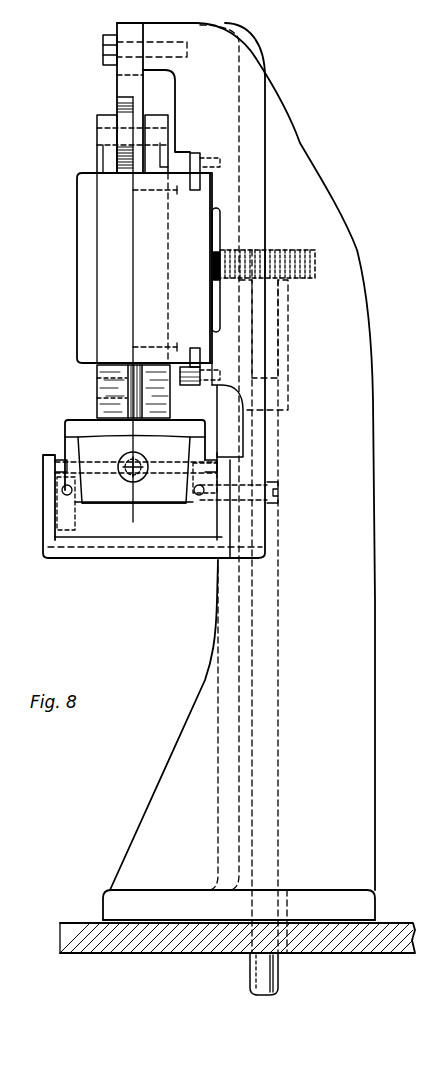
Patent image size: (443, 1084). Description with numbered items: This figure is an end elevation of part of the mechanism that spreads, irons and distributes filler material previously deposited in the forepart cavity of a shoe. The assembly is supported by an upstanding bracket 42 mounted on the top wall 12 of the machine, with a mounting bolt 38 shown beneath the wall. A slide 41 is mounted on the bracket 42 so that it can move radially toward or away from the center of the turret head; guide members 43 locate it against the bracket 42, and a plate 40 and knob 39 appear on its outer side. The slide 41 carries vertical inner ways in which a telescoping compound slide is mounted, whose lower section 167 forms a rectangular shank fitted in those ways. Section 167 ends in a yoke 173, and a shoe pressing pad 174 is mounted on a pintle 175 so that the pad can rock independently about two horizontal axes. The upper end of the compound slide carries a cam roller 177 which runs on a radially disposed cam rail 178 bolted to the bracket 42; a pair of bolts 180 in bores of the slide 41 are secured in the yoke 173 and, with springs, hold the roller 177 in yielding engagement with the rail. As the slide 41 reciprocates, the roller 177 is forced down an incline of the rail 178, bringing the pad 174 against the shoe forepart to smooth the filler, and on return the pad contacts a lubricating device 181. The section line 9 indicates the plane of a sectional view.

The section line 9- 9 is at (117, 96).
The top wall 12 is at (388, 955).
The mounting bolt 38 is at (263, 978).
The adjusting knob 39 is at (315, 237).
The clamp plate 40 is at (212, 265).
The slide 41 is at (160, 296).
The upstanding bracket 42 is at (239, 488).
The bracket 43 is at (213, 187).
The lower section 167 is at (102, 385).
The yoke 173 is at (80, 425).
The shoe pressing pad 174 is at (134, 492).
The second pintle 175 is at (130, 478).
The cam roll 177 is at (130, 132).
The cam rail 178 is at (128, 82).
The bolts 180 is at (118, 380).
The lubricating device 181 is at (100, 563).